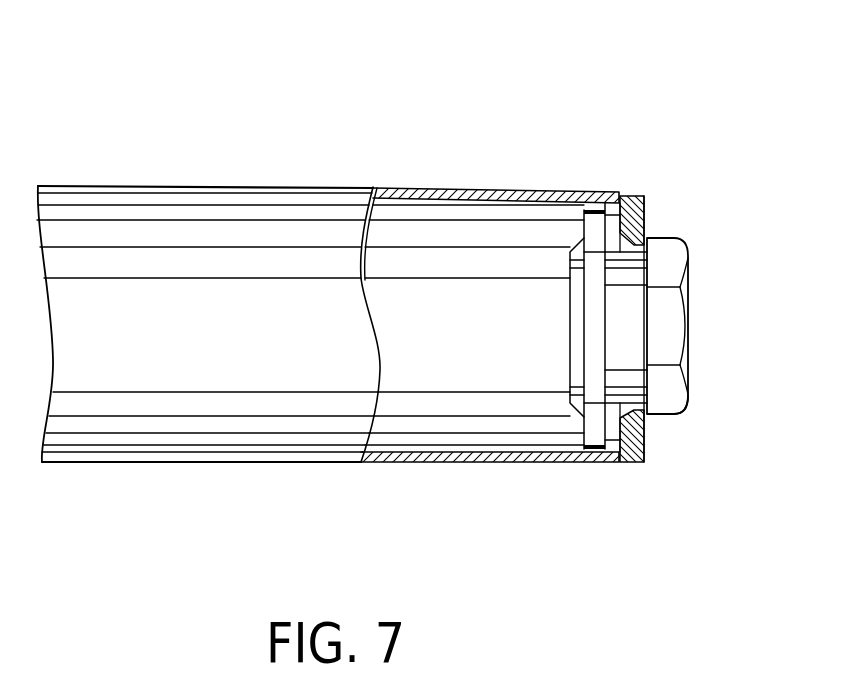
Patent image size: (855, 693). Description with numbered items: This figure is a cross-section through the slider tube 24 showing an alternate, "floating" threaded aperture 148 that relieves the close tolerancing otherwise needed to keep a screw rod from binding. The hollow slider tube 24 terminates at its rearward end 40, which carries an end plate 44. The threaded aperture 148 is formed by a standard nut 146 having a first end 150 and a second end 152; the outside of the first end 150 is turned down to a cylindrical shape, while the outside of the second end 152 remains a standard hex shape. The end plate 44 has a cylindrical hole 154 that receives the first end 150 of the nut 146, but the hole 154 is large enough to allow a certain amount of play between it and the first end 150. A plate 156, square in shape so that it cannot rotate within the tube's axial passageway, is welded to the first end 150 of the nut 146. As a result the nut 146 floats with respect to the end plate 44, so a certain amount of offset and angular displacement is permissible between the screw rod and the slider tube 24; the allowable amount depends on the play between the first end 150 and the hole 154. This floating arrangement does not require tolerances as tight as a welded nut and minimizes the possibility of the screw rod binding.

The slider tube 24 is at (227, 342).
The rearward end 40 is at (553, 188).
The end plate 44 is at (648, 201).
The nut 146 is at (688, 403).
The threaded aperture 148 is at (689, 318).
The first end 150 is at (572, 378).
The second end 152 is at (686, 363).
The cylindrical hole 154 is at (641, 243).
The plate 156 is at (584, 227).